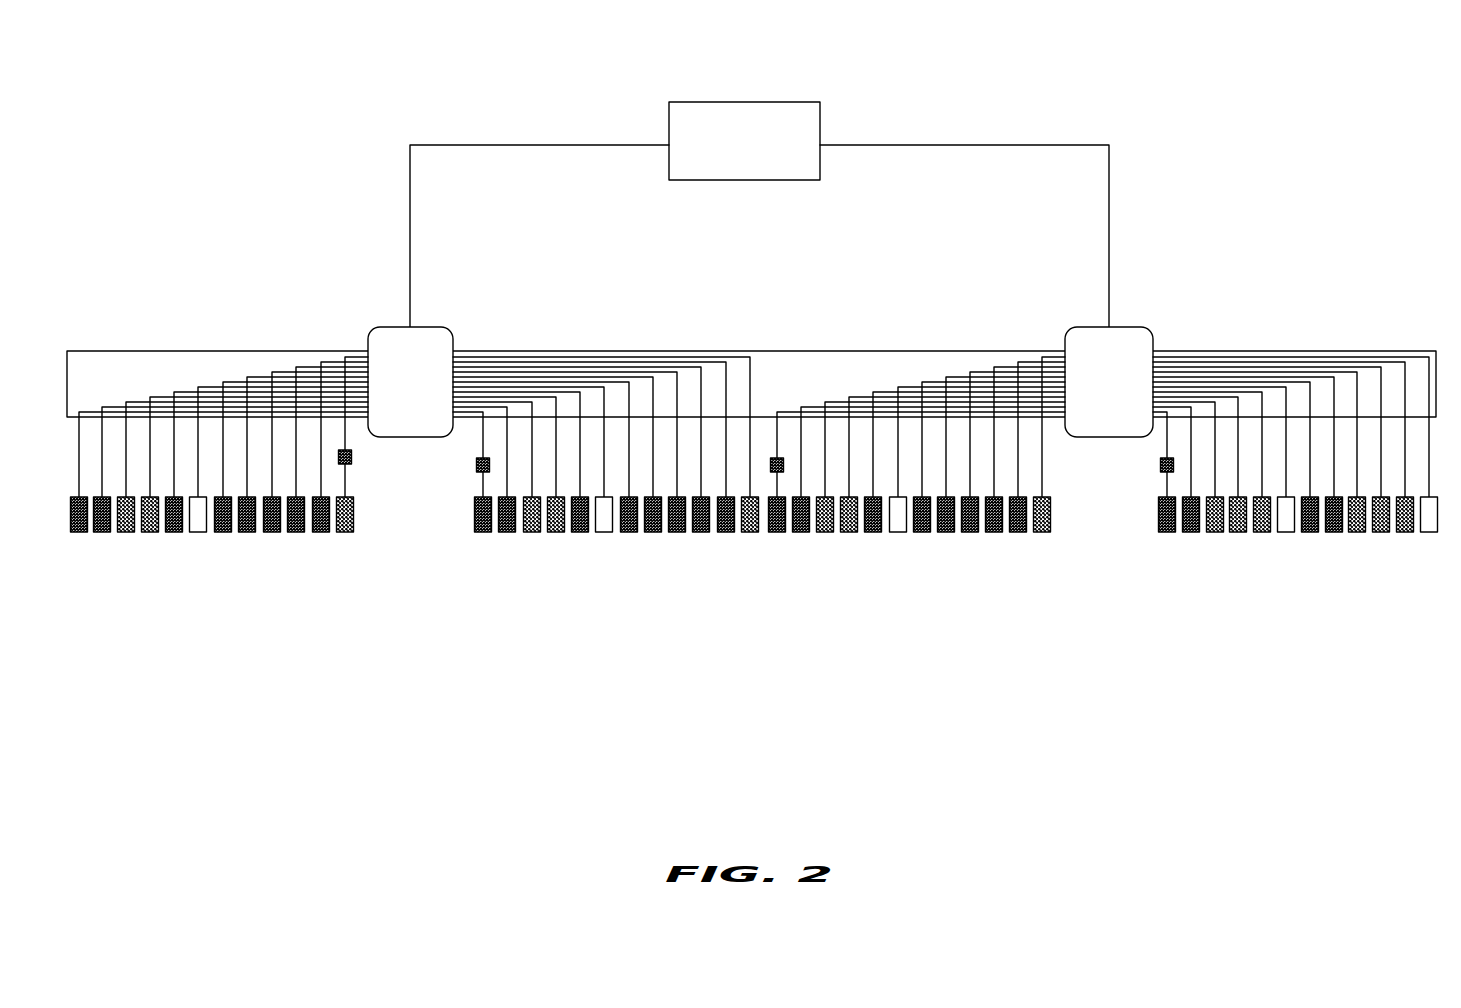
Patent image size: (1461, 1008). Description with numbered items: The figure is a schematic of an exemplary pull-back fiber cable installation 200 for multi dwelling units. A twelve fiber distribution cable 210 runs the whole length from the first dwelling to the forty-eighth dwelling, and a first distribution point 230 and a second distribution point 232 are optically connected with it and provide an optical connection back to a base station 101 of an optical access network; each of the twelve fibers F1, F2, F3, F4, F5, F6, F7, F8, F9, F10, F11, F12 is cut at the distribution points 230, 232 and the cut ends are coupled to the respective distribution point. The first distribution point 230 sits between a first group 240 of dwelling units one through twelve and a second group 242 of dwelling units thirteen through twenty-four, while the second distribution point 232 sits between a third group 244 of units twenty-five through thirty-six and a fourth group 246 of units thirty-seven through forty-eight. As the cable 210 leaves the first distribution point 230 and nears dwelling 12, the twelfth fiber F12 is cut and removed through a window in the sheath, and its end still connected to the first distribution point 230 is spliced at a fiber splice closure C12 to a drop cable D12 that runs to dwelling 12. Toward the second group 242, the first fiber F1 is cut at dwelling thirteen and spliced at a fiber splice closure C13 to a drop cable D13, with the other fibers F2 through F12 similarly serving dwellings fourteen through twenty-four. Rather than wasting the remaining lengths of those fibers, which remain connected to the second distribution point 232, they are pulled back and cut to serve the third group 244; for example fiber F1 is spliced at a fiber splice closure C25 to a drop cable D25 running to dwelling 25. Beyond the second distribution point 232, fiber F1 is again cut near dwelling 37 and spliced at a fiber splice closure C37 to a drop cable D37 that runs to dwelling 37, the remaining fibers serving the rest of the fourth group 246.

The base station 101 is at (790, 102).
The pull-back fiber cable installation 200 is at (1165, 141).
The fiber distribution cable 210 is at (893, 350).
The first distribution point 230 is at (413, 328).
The second distribution point 232 is at (1132, 327).
The first group 240 is at (223, 600).
The second group 242 is at (542, 600).
The third group 244 is at (939, 600).
The fourth group 246 is at (1221, 600).
The dwelling 12 is at (345, 533).
The dwelling 25 is at (778, 533).
The dwelling 37 is at (1165, 533).
The fiber splice closure C12 is at (352, 457).
The fiber splice closure C13 is at (477, 464).
The fiber splice closure C25 is at (771, 460).
The fiber splice closure C37 is at (1160, 465).
The drop cable D12 is at (348, 478).
The drop cable D13 is at (480, 492).
The drop cable D25 is at (776, 480).
The drop cable D37 is at (1164, 488).
The first fiber F1 is at (83, 410).
The second fiber F2 is at (110, 405).
The third fiber F3 is at (137, 397).
The fourth fiber F4 is at (163, 392).
The fifth fiber F5 is at (187, 388).
The sixth fiber F6 is at (212, 383).
The seventh fiber F7 is at (237, 378).
The eighth fiber F8 is at (262, 373).
The ninth fiber F9 is at (288, 368).
The tenth fiber F10 is at (307, 360).
The eleventh fiber F11 is at (337, 355).
The twelfth fiber F12 is at (357, 352).